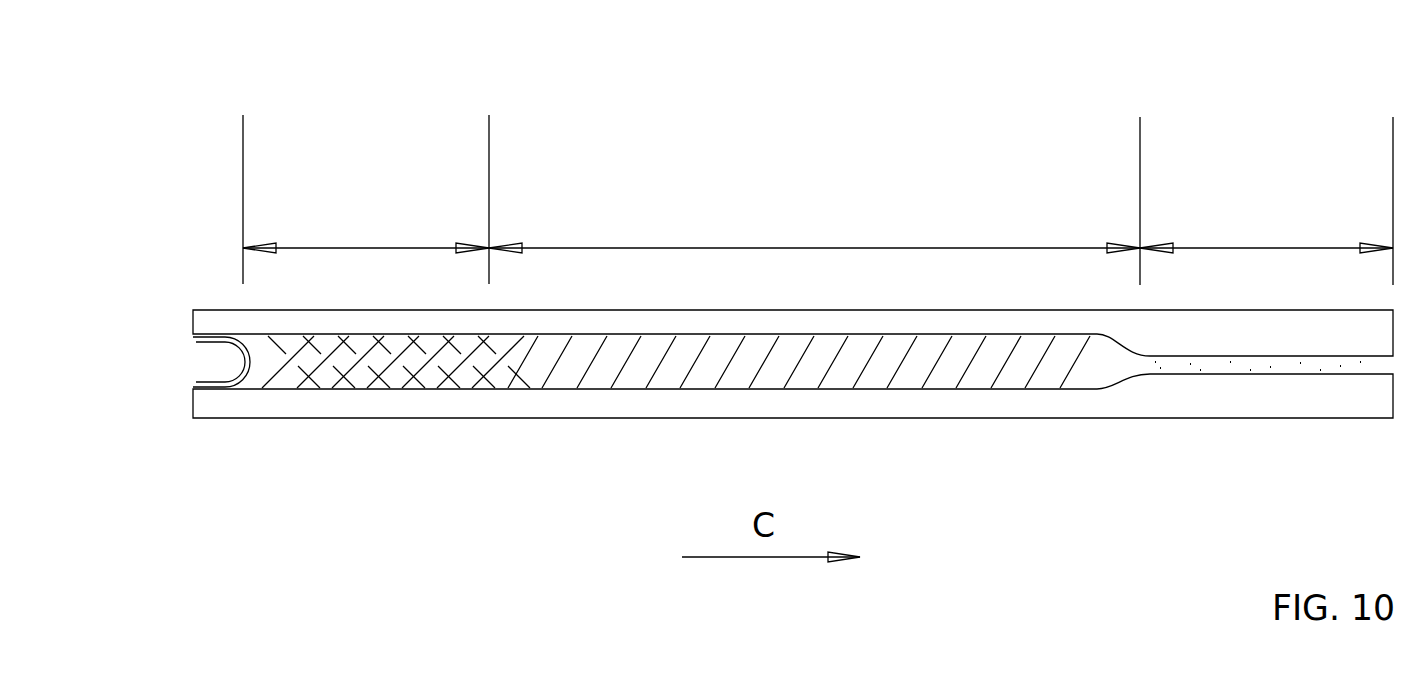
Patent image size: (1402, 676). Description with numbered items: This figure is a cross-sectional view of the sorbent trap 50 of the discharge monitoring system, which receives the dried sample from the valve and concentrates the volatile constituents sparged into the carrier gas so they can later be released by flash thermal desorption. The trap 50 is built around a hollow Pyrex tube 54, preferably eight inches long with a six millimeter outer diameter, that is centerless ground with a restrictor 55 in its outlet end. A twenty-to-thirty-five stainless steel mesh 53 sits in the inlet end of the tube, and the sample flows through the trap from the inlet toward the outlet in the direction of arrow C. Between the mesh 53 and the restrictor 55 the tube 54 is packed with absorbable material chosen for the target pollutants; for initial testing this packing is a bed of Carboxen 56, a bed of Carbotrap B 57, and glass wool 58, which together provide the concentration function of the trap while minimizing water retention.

The sorbent trap 50 is at (353, 93).
The stainless steel mesh 53 is at (228, 378).
The hollow Pyrex tube 54 is at (366, 422).
The restrictor 55 is at (1336, 375).
The Carboxen 56 is at (305, 240).
The Carbotrap B 57 is at (678, 242).
The glass wool 58 is at (1188, 243).